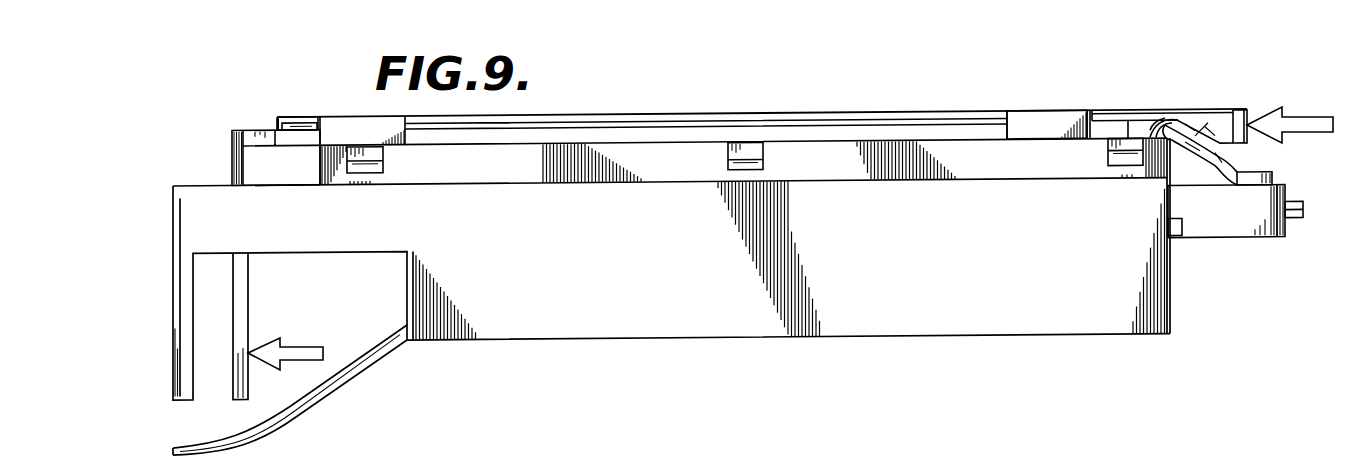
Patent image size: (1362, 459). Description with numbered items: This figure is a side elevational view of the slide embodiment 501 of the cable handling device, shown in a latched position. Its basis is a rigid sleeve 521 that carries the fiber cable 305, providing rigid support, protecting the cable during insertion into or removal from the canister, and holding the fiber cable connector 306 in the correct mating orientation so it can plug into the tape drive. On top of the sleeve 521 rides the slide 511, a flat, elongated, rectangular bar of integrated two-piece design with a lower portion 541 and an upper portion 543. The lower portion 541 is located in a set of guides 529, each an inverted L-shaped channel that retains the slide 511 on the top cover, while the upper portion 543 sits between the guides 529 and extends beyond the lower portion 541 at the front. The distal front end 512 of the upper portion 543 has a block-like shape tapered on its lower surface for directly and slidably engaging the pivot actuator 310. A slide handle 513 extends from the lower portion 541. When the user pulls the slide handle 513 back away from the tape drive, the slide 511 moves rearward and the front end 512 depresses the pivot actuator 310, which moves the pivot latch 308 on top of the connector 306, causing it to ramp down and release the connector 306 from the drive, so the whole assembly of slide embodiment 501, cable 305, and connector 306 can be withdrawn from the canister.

The slide embodiment 501 is at (314, 83).
The slide 511 is at (878, 103).
The upper portion 543 is at (708, 118).
The lower portion 541 is at (602, 132).
The guides 529 is at (1037, 120).
The pivot actuator 310 is at (1163, 118).
The front end 512 is at (1238, 110).
The pivot latch 308 is at (1197, 155).
The fiber cable connector 306 is at (1240, 208).
The sleeve 521 is at (940, 322).
The slide handle 513 is at (242, 308).
The fiber cable 305 is at (360, 363).